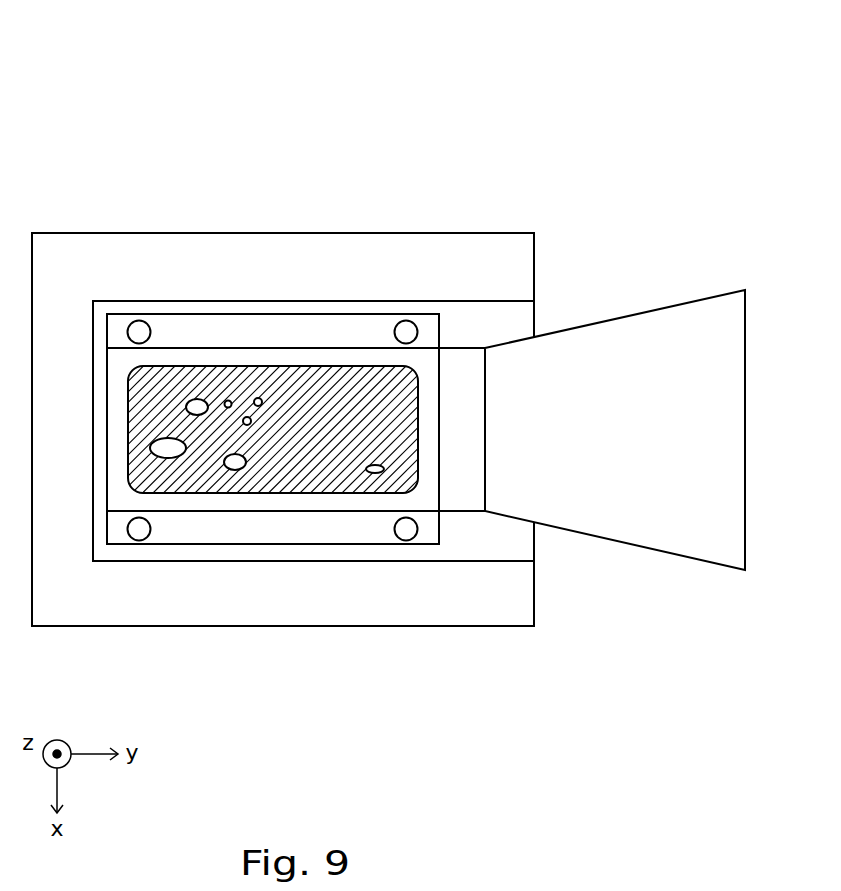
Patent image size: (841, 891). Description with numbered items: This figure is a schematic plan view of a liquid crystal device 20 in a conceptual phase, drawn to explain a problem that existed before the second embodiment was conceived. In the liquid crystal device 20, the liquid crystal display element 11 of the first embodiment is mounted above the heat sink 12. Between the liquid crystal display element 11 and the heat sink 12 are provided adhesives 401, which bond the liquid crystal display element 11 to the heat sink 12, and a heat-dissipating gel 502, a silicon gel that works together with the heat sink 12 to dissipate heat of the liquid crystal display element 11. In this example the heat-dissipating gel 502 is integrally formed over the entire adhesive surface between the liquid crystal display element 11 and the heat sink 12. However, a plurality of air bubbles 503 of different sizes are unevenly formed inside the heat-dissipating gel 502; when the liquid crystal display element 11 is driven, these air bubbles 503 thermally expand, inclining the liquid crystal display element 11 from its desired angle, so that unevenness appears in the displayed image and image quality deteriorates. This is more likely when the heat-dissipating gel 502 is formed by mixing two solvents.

The liquid crystal device 20 is at (283, 54).
The heat sink 12 is at (407, 253).
The liquid crystal display element 11 is at (339, 314).
The adhesives 401 is at (139, 321).
The heat-dissipating gel 502 is at (270, 385).
The air bubbles 503 is at (200, 399).